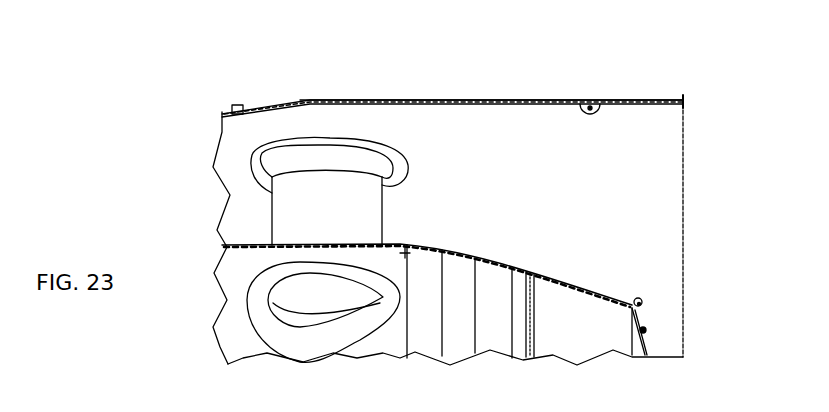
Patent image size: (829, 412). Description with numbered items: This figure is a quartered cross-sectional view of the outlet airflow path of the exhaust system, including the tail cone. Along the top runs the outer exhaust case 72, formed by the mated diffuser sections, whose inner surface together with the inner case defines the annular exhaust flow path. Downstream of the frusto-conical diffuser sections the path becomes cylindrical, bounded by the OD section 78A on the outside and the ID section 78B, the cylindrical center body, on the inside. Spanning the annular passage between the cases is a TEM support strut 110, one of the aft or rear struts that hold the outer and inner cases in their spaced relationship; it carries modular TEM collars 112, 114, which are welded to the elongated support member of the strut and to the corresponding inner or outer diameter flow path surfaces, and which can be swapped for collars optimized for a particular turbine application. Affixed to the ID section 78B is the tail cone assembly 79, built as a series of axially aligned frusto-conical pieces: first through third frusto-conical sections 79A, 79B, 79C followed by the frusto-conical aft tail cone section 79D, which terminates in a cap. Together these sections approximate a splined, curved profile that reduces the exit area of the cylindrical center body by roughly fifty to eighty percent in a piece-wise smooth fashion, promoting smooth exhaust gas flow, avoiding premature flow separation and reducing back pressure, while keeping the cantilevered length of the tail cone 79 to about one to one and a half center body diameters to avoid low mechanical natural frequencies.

The outer exhaust case 72 is at (597, 86).
The OD section 78A is at (517, 113).
The ID section 78B is at (401, 240).
The tail cone assembly 79 is at (557, 252).
The first frusto-conical section 79A is at (432, 243).
The second frusto-conical section 79B is at (463, 247).
The third frusto-conical section 79C is at (502, 247).
The frusto-conical aft tail cone section 79D is at (633, 302).
The TEM support strut 110 is at (290, 210).
The modular TEM collar 112 is at (250, 172).
The modular TEM collar 114 is at (258, 328).